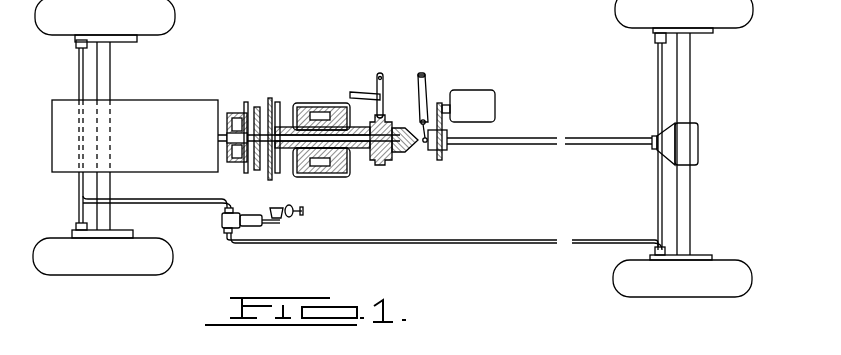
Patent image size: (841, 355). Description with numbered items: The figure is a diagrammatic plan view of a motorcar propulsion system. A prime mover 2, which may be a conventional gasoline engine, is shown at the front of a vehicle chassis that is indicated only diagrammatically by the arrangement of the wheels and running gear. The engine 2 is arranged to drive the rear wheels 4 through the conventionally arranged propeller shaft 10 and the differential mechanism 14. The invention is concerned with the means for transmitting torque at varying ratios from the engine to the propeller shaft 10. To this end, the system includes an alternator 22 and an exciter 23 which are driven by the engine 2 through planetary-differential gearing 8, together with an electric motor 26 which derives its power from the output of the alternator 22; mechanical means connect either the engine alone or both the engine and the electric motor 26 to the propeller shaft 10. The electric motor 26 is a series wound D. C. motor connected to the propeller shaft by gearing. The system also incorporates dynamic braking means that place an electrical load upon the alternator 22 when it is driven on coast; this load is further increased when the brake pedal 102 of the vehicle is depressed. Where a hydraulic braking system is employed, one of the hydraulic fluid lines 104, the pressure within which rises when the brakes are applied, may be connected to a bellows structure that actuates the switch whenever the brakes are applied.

The prime mover 2 is at (150, 140).
The rear wheels 4 is at (615, 3).
The planetary-differential gearing 8 is at (262, 97).
The propeller shaft 10 is at (600, 120).
The differential mechanism 14 is at (683, 138).
The alternator 22 is at (307, 105).
The exciter 23 is at (342, 115).
The electric motor 26 is at (480, 100).
The brake pedal 102 is at (288, 218).
The hydraulic fluid line 104 is at (481, 220).